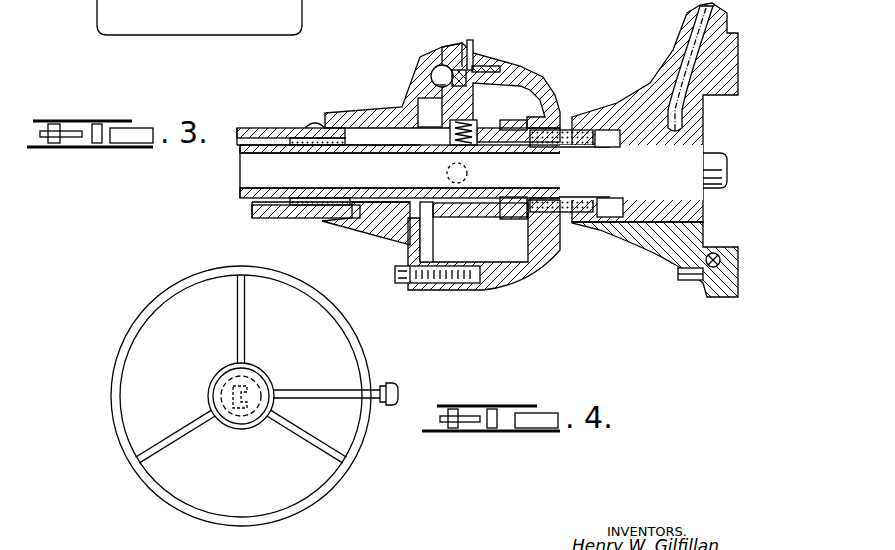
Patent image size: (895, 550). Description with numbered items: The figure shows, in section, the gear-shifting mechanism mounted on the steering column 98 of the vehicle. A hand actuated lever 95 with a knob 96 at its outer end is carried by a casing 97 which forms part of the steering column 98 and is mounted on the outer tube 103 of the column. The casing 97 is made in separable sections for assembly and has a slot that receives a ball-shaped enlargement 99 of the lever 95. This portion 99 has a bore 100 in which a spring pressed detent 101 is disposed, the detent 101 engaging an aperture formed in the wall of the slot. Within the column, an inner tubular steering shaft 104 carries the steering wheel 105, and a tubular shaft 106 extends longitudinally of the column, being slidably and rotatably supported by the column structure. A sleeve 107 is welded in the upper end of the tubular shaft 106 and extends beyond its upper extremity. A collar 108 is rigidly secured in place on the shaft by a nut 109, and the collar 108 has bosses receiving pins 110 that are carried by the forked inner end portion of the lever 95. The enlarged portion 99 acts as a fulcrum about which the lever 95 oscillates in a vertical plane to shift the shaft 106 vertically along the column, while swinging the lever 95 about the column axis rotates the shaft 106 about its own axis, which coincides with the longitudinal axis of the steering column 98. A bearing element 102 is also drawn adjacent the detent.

In FIG. 3, the hand actuated lever 95 is at (441, 55).
In FIG. 4, the hand actuated lever 95 is at (333, 379).
In FIG. 4, the knob 96 is at (393, 383).
In FIG. 3, the casing 97 is at (540, 262).
In FIG. 3, the steering column 98 is at (262, 128).
In FIG. 3, the ball-shaped enlargement 99 is at (470, 48).
In FIG. 3, the bore 100 is at (480, 100).
In FIG. 3, the spring pressed detent 101 is at (431, 79).
In FIG. 3, the bearing 102 is at (433, 90).
In FIG. 3, the outer tube 103 is at (272, 219).
In FIG. 3, the inner tubular steering shaft 104 is at (425, 171).
In FIG. 3, the steering wheel 105 is at (686, 45).
In FIG. 4, the steering wheel 105 is at (283, 510).
In FIG. 3, the tubular shaft 106 is at (380, 172).
In FIG. 3, the sleeve 107 is at (446, 172).
In FIG. 3, the collar 108 is at (450, 213).
In FIG. 3, the nut 109 is at (513, 214).
In FIG. 3, the pins 110 is at (468, 172).
In FIG. 4, the pins 110 is at (241, 407).